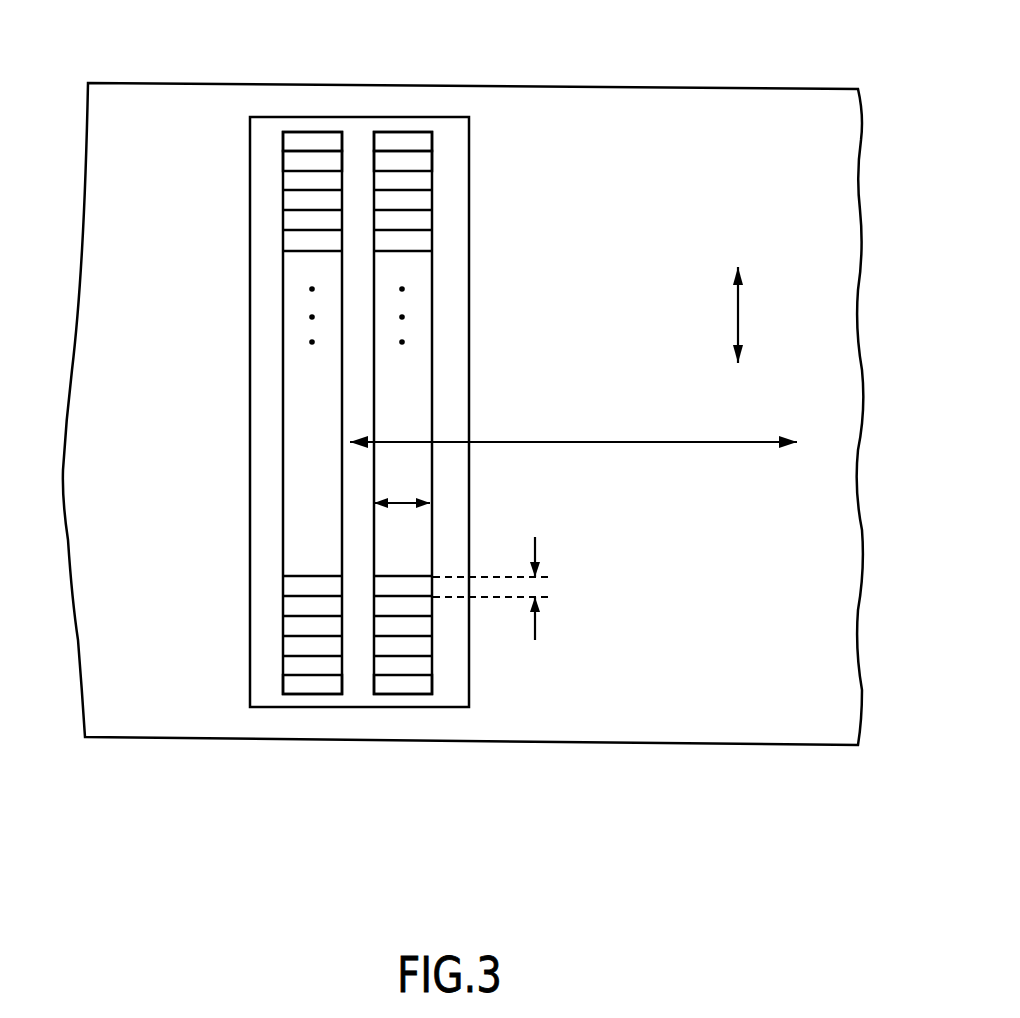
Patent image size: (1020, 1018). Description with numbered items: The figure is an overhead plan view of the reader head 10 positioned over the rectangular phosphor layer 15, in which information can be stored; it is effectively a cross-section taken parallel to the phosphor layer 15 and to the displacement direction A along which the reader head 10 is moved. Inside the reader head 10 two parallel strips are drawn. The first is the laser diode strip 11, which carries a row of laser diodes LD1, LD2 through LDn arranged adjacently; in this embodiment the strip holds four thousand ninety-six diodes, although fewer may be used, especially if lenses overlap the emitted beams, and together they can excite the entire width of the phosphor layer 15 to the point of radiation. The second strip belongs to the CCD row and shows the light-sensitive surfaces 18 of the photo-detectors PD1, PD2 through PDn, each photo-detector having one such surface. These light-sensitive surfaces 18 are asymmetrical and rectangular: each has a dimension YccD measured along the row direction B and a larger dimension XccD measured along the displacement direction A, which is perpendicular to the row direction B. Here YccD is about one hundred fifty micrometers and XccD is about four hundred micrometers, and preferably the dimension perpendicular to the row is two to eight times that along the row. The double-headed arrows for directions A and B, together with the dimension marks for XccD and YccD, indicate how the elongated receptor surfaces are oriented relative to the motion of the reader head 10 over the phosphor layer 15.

The phosphor layer 15 is at (622, 101).
The reader head 10 is at (501, 287).
The laser diode strip 11 is at (256, 412).
The light-sensitive surfaces 18 is at (428, 375).
The laser diode LD1 is at (292, 142).
The laser diode LD2 is at (292, 164).
The laser diode LDn is at (292, 684).
The photo-detector PD1 is at (427, 143).
The photo-detector PD2 is at (427, 163).
The photo-detector PDn is at (425, 683).
The displacement direction A is at (652, 442).
The row direction B is at (739, 312).
The dimension of light-sensitive surface along displacement direction XccD is at (400, 500).
The dimension of light-sensitive surface along row direction YccD is at (536, 587).